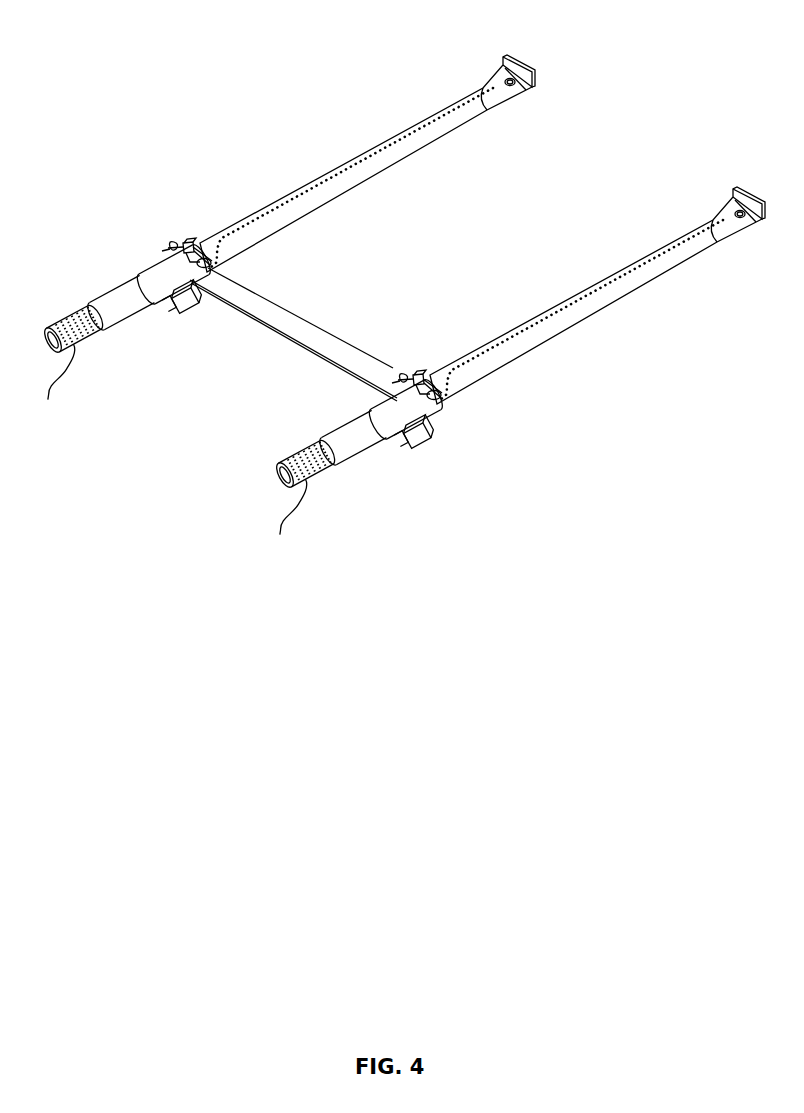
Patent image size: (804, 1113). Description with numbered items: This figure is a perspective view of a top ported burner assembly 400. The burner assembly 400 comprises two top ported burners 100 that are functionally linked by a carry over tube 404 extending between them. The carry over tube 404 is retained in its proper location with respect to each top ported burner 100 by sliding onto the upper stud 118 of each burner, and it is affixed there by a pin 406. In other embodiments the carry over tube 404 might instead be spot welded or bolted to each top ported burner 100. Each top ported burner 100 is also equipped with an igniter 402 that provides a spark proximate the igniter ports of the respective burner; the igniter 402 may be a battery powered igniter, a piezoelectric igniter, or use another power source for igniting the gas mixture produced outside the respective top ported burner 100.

The top ported burner assembly 400 is at (142, 90).
The top ported burner 100 is at (340, 172).
The upper stud 118 is at (190, 240).
The igniter 402 is at (172, 312).
The carry over tube 404 is at (295, 332).
The pin 406 is at (165, 248).